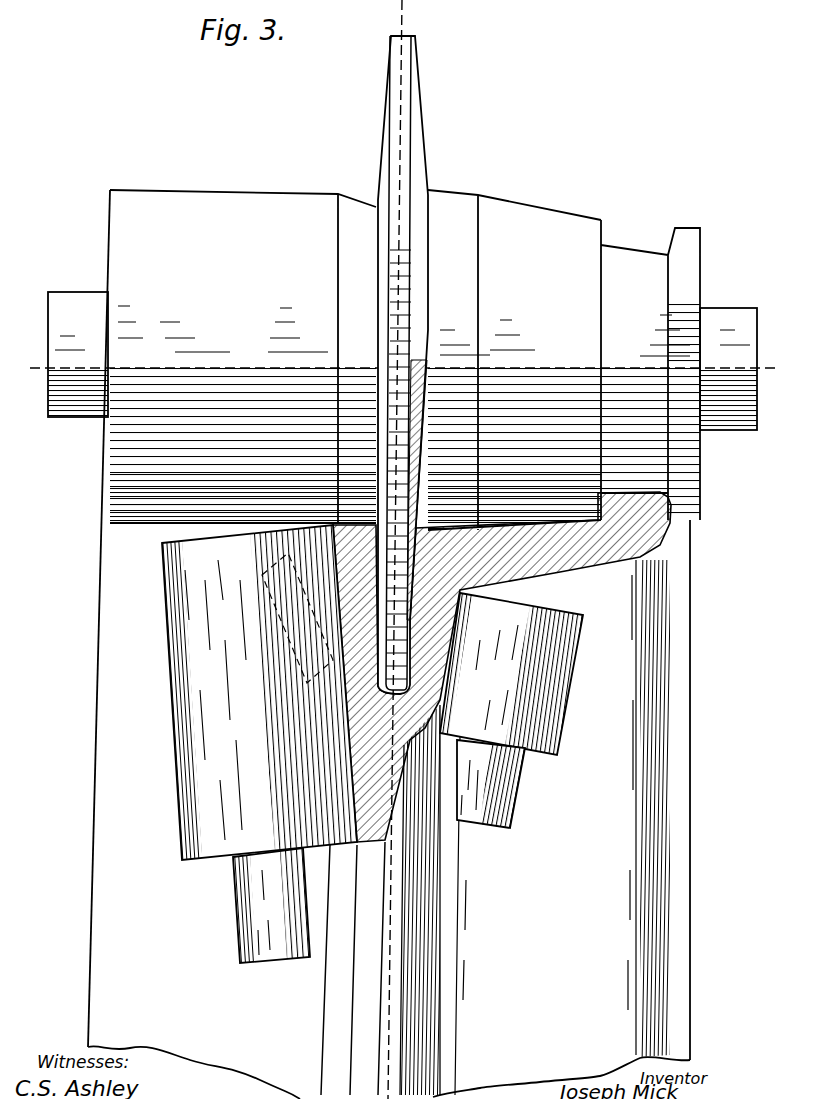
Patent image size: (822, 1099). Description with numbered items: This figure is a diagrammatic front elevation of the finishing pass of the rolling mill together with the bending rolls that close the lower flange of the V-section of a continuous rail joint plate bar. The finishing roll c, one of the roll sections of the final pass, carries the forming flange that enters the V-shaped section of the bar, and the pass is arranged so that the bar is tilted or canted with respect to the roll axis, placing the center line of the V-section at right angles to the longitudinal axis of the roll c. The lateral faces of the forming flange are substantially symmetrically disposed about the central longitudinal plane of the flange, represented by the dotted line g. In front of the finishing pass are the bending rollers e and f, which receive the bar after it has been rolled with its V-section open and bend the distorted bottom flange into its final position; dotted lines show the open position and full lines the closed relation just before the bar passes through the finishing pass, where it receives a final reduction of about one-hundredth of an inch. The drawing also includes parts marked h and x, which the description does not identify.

The roll section c is at (112, 229).
The roll shaft / journal h is at (48, 352).
The blade / knife x is at (420, 135).
The dotted line g is at (403, 26).
The bending roller e is at (187, 697).
The bending roller f is at (560, 705).